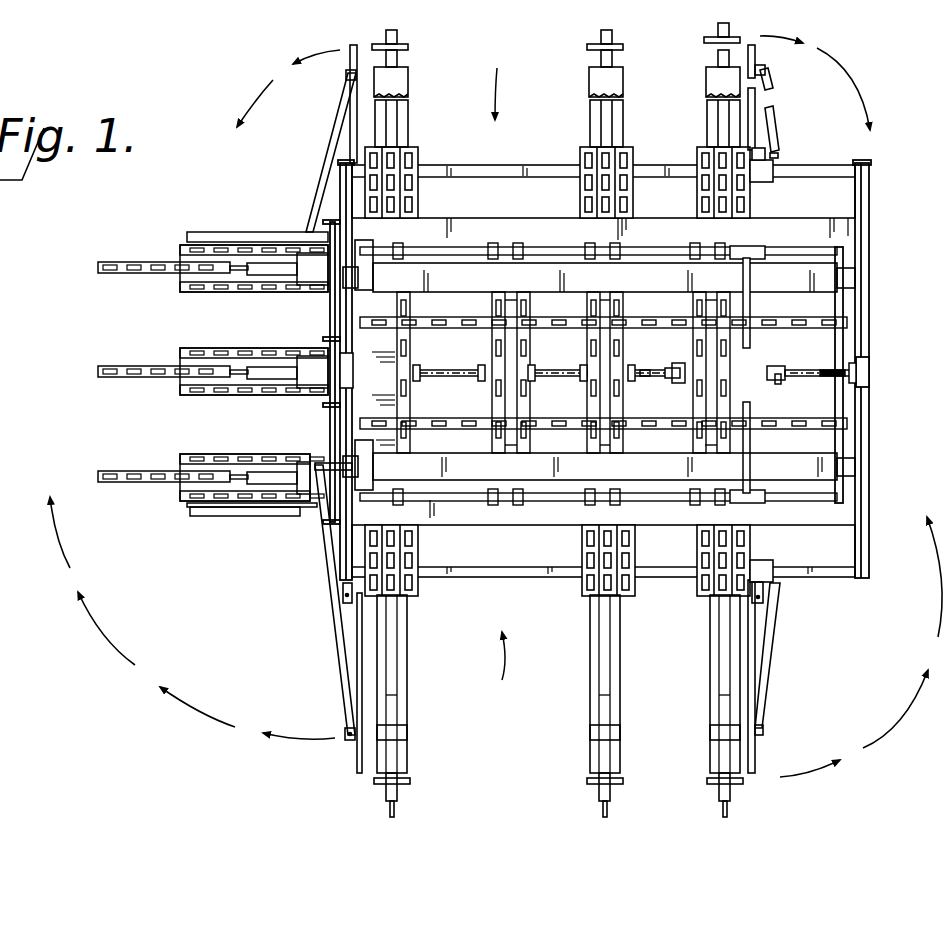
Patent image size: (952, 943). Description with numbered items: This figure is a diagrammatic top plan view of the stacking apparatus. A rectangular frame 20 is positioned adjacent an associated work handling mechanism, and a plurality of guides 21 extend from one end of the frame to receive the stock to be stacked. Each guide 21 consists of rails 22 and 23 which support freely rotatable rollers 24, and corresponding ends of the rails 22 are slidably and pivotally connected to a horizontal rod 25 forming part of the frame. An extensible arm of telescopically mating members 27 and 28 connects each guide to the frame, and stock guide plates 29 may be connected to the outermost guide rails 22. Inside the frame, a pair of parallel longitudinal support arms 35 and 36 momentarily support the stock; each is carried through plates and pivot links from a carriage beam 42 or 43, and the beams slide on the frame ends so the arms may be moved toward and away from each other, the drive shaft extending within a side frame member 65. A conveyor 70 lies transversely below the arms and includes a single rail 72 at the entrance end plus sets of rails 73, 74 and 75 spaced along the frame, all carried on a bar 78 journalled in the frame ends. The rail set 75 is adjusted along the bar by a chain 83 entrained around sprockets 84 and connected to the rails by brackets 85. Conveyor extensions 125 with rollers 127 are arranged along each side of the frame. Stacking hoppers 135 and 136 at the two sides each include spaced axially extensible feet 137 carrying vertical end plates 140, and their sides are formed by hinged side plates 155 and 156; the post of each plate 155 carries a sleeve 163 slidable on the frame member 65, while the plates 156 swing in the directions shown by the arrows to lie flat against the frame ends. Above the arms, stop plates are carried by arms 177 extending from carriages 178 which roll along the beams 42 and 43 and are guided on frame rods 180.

The frame 20 is at (872, 204).
The guide 21 is at (190, 246).
The rail 22 is at (285, 236).
The rail 23 is at (172, 274).
The roller 24 is at (218, 246).
The horizontal rod 25 is at (340, 336).
The telescopically mating member 27 is at (238, 272).
The telescopically mating member 28 is at (285, 270).
The stock guide plate 29 is at (245, 234).
The support arm 35 is at (462, 418).
The support arm 36 is at (462, 319).
The carriage beam 42 is at (480, 475).
The carriage beam 43 is at (453, 272).
The side frame member 65 is at (490, 170).
The conveyor 70 is at (449, 367).
The rail 72 is at (395, 357).
The set of rails 73 is at (525, 355).
The set of rails 74 is at (615, 352).
The set of rails 75 is at (695, 354).
The bar 78 is at (540, 383).
The chain 83 is at (643, 378).
The sprocket 84 is at (830, 368).
The bracket 85 is at (668, 380).
The conveyor extension 125 is at (420, 195).
The roller 127 is at (418, 598).
The stacking hopper 135 is at (494, 666).
The stacking hopper 136 is at (501, 84).
The axially extensible foot 137 is at (408, 78).
The vertical end plate 140 is at (410, 50).
The hinged side plate 155 is at (772, 95).
The hinged side plate 156 is at (340, 98).
The sleeve 163 is at (775, 170).
The arm 177 is at (750, 305).
The carriage 178 is at (740, 252).
The frame rod 180 is at (580, 232).